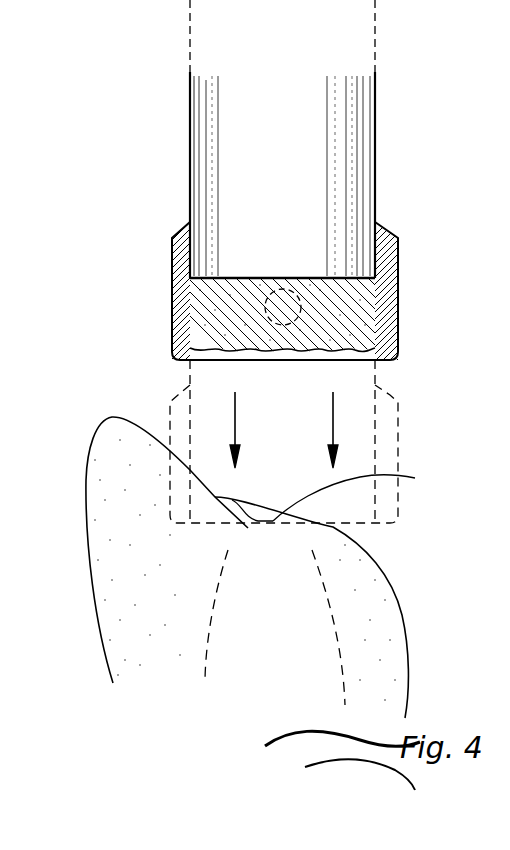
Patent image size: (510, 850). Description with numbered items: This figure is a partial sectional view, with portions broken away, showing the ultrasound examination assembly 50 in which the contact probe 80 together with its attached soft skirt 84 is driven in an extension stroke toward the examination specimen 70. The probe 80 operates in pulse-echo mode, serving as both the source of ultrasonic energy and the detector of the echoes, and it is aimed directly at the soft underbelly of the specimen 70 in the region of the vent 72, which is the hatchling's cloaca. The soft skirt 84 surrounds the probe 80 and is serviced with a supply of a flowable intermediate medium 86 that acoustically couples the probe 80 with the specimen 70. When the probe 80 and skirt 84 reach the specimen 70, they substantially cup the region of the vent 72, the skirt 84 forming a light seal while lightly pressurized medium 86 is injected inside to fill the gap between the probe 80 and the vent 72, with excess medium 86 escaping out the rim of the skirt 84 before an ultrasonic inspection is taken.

The dental curing light tip assembly 50 is at (178, 82).
The contact probe 80 is at (248, 277).
The soft skirt 84 is at (182, 326).
The intermediate medium 86 is at (212, 304).
The examination specimen 70 is at (372, 572).
The vent 72 is at (273, 520).